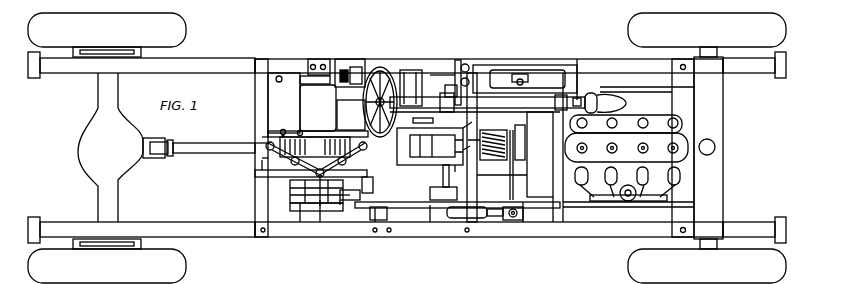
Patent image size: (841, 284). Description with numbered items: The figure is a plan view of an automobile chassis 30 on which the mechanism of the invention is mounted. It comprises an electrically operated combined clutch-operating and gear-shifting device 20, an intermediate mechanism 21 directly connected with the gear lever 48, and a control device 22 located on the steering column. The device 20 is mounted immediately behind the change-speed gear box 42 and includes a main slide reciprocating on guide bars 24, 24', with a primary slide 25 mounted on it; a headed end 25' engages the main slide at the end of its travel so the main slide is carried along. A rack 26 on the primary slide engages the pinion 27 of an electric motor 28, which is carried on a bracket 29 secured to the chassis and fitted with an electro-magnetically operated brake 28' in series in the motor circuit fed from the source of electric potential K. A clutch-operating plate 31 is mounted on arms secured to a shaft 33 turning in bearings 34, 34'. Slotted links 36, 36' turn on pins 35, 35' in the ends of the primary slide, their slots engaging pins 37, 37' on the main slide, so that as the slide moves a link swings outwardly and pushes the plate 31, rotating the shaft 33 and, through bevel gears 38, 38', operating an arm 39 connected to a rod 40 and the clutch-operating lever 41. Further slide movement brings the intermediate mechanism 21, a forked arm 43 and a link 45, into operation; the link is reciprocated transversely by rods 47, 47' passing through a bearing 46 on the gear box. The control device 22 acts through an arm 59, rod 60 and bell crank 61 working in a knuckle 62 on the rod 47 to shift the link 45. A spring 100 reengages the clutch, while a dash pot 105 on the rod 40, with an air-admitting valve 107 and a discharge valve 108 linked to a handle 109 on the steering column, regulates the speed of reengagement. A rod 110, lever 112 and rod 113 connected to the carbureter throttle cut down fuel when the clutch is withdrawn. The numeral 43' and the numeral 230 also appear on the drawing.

The source of electric potential K is at (277, 76).
The clutch-operating and gear-shifting device 20 is at (290, 178).
The intermediate mechanism 21 is at (502, 181).
The control device 22 is at (432, 74).
The guide bar 24 is at (297, 140).
The guide bar 24' is at (246, 165).
The primary slide member 25 is at (318, 123).
The headed end 25' is at (345, 227).
The rack 26 is at (262, 130).
The pinion 27 is at (292, 123).
The electric motor 28 is at (324, 80).
The electro-magnetically operated brake 28' is at (353, 51).
The bracket 29 is at (318, 58).
The chassis 30 is at (250, 232).
The clutch-operating plate 31 is at (300, 222).
The shaft 33 is at (316, 193).
The bearing 34 is at (312, 205).
The bearing 34' is at (336, 203).
The pin 35 is at (315, 130).
The pin 35' is at (232, 132).
The slotted link 36 is at (322, 216).
The slotted link 36' is at (226, 168).
The pin 37 is at (508, 145).
The pin 37' is at (298, 185).
The bevel gear 38 is at (424, 157).
The bevel gear 38' is at (443, 172).
The arm 39 is at (377, 222).
The rod 40 is at (400, 220).
The clutch-operating lever 41 is at (524, 222).
The gear box 42 is at (443, 182).
The forked arm 43 is at (463, 139).
The lever 43' is at (468, 145).
The link 45 is at (526, 150).
The bearing 46 is at (455, 64).
The rod 47 is at (416, 119).
The rod 47' is at (440, 230).
The gear lever 48 is at (500, 165).
The arm 59 is at (580, 80).
The rod 60 is at (548, 64).
The bell crank 61 is at (462, 80).
The knuckle 62 is at (425, 97).
The spring 100 is at (495, 137).
The dash pot 105 is at (462, 218).
The valve 107 is at (500, 222).
The valve 108 is at (509, 233).
The handle 109 is at (370, 120).
The rod 110 is at (322, 222).
The lever 112 is at (352, 222).
The rod 113 is at (556, 222).
The pin 230 is at (283, 129).